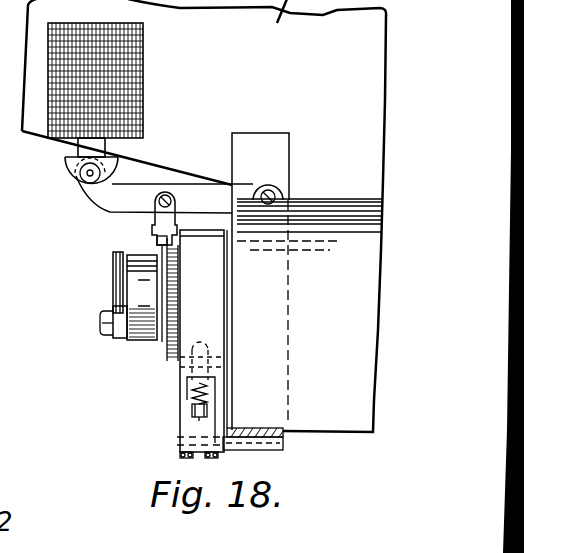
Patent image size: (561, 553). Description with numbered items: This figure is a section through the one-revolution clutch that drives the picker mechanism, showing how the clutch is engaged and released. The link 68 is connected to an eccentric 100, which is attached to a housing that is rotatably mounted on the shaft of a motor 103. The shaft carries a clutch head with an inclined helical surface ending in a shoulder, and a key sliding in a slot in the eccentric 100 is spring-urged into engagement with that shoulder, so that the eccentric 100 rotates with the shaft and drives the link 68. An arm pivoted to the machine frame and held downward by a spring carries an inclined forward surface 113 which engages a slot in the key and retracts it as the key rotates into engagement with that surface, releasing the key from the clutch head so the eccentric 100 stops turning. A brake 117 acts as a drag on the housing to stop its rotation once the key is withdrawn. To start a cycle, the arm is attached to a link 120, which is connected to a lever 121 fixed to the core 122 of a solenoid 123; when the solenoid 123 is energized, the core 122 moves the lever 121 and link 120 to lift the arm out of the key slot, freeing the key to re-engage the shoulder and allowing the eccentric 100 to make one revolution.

The link 68 is at (113, 261).
The eccentric 100 is at (130, 343).
The motor 103 is at (302, 291).
The inclined forward surface 113 is at (152, 280).
The brake 117 is at (202, 344).
The link 120 is at (173, 213).
The lever 121 is at (121, 200).
The core 122 is at (78, 166).
The solenoid 123 is at (143, 82).